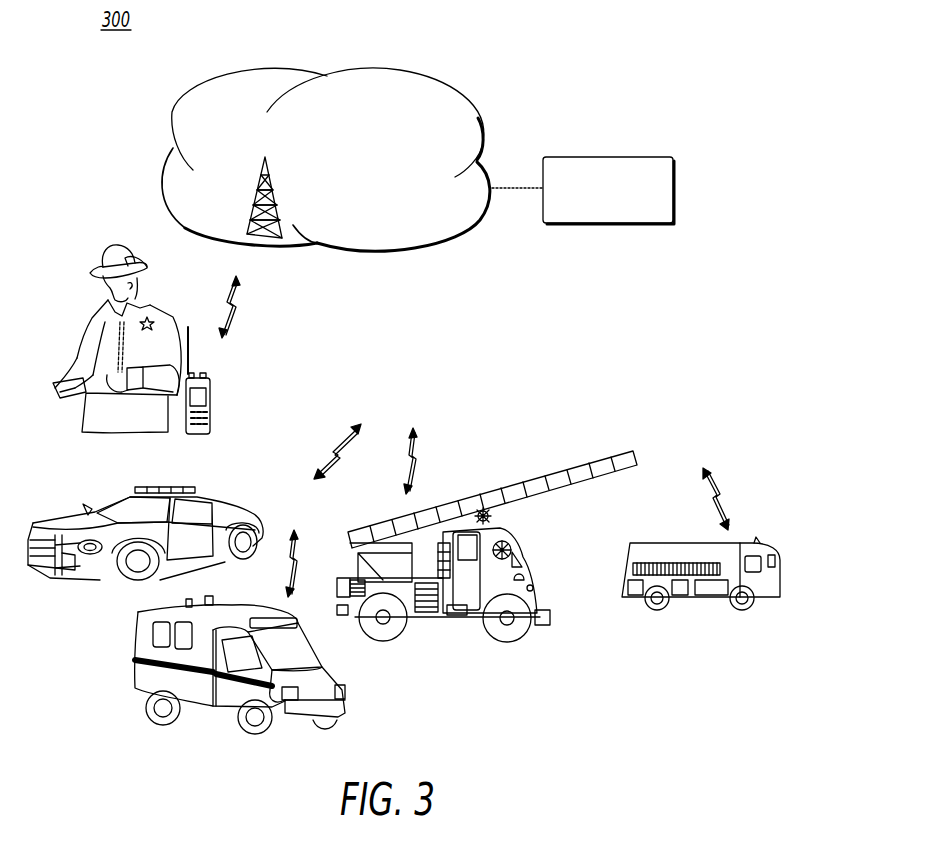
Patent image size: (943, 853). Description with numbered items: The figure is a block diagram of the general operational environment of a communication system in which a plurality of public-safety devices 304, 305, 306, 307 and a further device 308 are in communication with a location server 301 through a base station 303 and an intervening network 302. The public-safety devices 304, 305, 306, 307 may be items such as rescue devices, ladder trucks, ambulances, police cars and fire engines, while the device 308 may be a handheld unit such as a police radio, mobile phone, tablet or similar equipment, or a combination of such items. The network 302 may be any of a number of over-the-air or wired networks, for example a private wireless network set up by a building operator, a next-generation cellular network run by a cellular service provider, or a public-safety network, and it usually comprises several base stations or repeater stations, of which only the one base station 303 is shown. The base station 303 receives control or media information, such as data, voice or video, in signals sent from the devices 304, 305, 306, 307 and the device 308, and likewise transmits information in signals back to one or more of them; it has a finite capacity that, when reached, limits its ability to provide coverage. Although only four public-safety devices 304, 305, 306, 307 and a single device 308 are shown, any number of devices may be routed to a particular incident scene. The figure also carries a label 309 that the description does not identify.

The location server 301 is at (638, 156).
The network 302 is at (477, 117).
The base station 303 is at (268, 166).
The public-safety device 304 is at (258, 512).
The public-safety device 305 is at (636, 457).
The public-safety device 306 is at (780, 547).
The public-safety device 307 is at (347, 680).
The device 308 is at (216, 399).
The police officer 309 is at (140, 258).